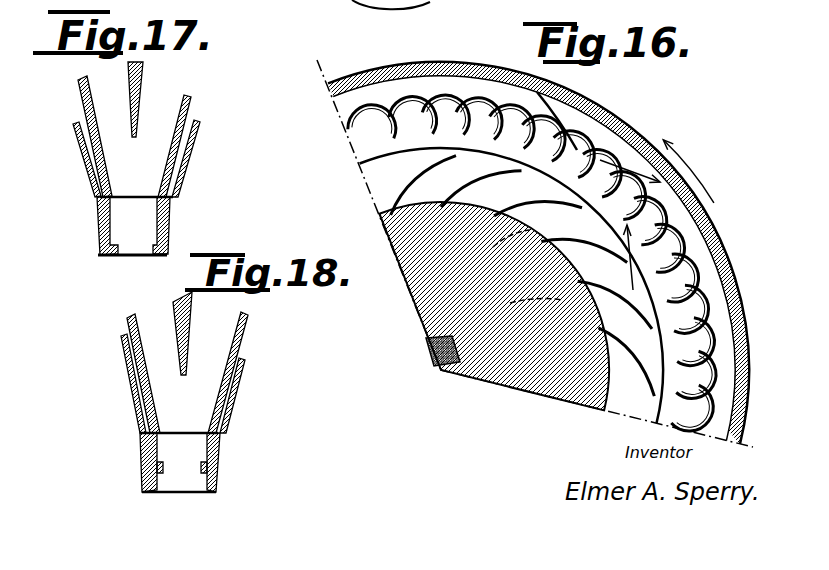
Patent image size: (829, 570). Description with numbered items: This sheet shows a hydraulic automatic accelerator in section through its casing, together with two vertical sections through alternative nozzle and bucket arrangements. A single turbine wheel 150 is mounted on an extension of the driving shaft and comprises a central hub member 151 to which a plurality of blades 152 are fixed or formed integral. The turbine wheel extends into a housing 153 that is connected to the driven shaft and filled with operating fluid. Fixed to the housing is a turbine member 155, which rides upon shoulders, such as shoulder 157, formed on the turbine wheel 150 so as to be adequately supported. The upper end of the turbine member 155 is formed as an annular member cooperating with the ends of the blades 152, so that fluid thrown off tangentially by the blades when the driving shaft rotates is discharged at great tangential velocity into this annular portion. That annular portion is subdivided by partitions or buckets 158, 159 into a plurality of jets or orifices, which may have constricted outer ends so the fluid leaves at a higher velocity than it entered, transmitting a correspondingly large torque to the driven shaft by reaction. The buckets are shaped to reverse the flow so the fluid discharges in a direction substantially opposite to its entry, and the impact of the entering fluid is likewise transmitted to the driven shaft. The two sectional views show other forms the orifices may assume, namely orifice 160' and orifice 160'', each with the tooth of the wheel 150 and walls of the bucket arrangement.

In FIG. 16, the turbine wheel 150 is at (404, 213).
In FIG. 17, the turbine wheel 150 is at (143, 68).
In FIG. 18, the turbine wheel 150 is at (175, 312).
In FIG. 16, the central hub member 151 is at (478, 362).
In FIG. 16, the blades 152 is at (477, 183).
In FIG. 17, the blades 152 is at (134, 136).
In FIG. 18, the blades 152 is at (187, 372).
In FIG. 16, the housing 153 is at (440, 63).
In FIG. 17, the turbine member 155 is at (78, 152).
In FIG. 18, the turbine member 155 is at (243, 387).
In FIG. 17, the shoulder 157 is at (173, 197).
In FIG. 18, the shoulder 157 is at (147, 433).
In FIG. 16, the partition 158 is at (573, 122).
In FIG. 16, the partition 159 is at (415, 107).
In FIG. 17, the orifice 160' is at (118, 246).
In FIG. 18, the orifice 160'' is at (180, 483).